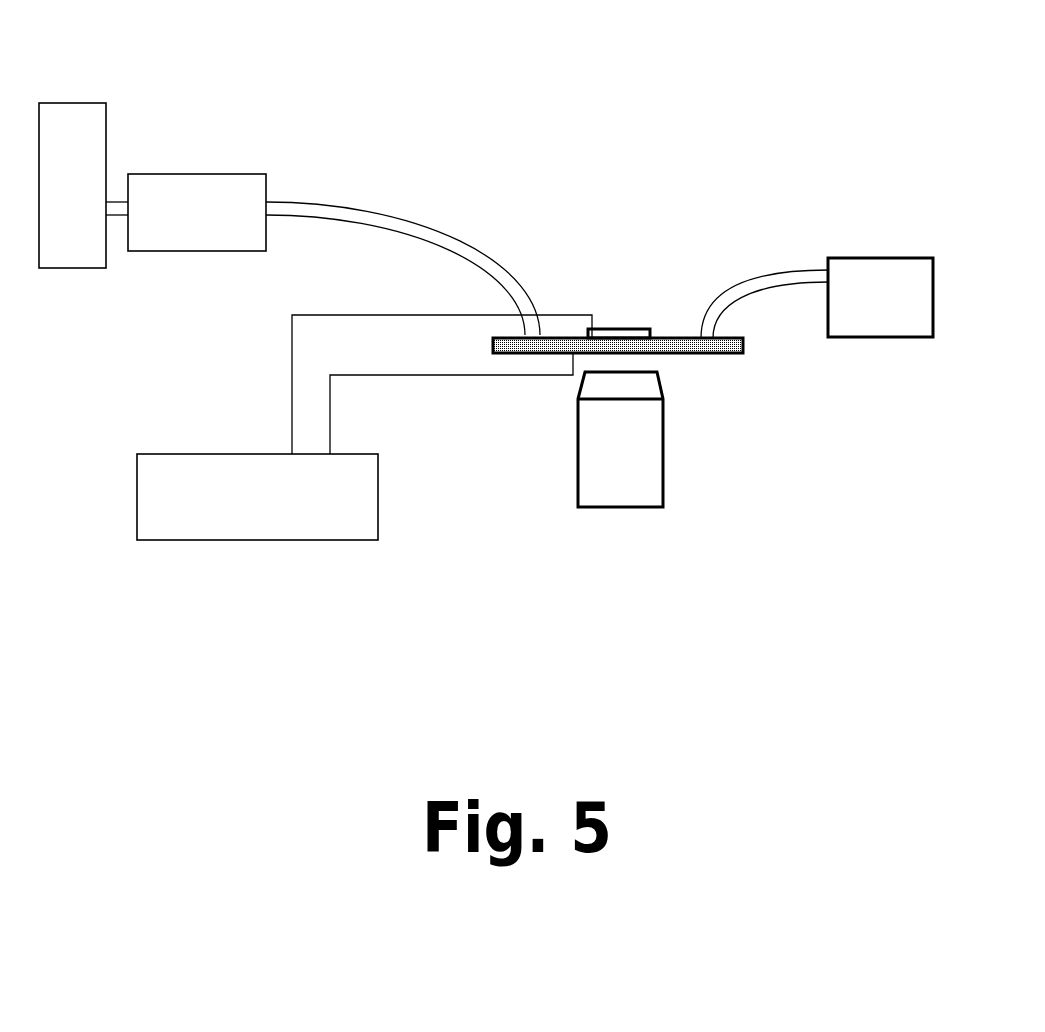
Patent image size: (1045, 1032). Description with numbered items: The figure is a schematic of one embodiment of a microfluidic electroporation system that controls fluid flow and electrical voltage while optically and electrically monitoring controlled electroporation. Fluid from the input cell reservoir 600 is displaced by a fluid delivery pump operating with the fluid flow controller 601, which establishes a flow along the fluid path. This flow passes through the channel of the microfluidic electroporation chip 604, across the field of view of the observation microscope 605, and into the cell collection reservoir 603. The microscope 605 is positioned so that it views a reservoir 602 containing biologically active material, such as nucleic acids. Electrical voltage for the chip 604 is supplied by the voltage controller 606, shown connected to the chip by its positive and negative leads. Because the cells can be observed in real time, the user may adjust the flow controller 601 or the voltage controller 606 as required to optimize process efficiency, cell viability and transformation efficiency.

The input cell reservoir 600 is at (72, 165).
The fluid flow controller 601 is at (198, 230).
The reservoir 602 is at (620, 328).
The cell collection reservoir 603 is at (885, 303).
The microfluidic electroporation chip 604 is at (675, 357).
The observation microscope 605 is at (610, 440).
The voltage controller 606 is at (248, 493).